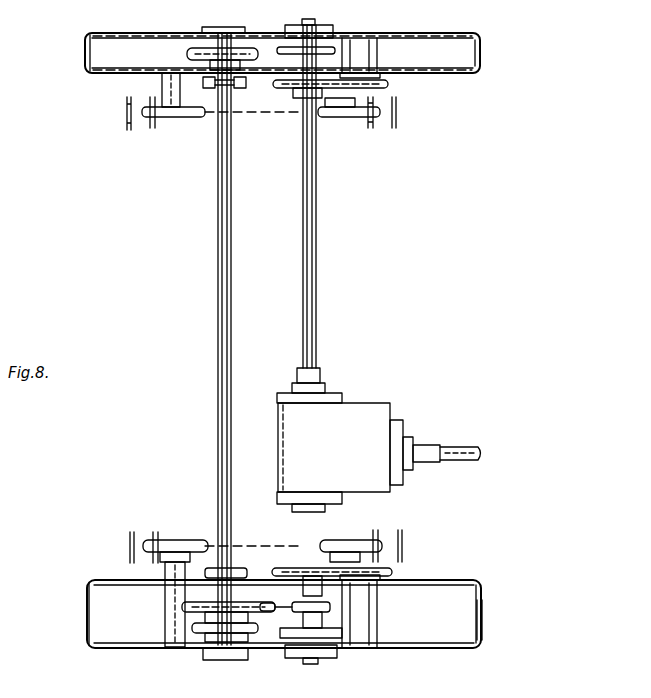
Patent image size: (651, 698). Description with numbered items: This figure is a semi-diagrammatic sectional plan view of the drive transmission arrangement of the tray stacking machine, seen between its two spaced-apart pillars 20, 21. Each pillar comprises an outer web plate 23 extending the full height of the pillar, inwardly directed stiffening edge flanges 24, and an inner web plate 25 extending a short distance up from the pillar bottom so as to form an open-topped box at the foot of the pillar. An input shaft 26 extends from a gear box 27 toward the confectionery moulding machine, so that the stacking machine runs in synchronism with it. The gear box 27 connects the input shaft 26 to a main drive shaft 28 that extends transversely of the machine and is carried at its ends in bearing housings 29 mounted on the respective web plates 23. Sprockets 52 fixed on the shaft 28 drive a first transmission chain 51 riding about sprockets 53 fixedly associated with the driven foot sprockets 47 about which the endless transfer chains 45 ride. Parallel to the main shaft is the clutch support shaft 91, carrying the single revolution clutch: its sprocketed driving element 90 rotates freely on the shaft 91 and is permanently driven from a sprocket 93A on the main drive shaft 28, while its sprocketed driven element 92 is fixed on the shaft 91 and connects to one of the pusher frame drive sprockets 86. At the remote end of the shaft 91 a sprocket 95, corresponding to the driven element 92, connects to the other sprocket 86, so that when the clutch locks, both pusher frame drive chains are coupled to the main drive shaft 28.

The pillar 20 is at (492, 54).
The pillar 21 is at (492, 616).
The outer web plate 23 is at (438, 33).
The stiffening edge flange 24 is at (85, 55).
The inner web plate 25 is at (440, 73).
The input shaft 26 is at (458, 447).
The gear box 27 is at (345, 440).
The main drive shaft 28 is at (312, 270).
The bearing housing 29 is at (327, 30).
The transfer chain 45 is at (258, 115).
The foot sprocket 47 is at (176, 118).
The first transmission chain 51 is at (371, 112).
The sprocket 52 is at (290, 90).
The sprocket 53 is at (396, 100).
The sprocket 86 is at (214, 568).
The sprocketed driving element 90 is at (195, 610).
The clutch support shaft 91 is at (218, 266).
The sprocketed driven element 92 is at (212, 632).
The sprocket 93A is at (298, 612).
The sprocket 95 is at (205, 48).